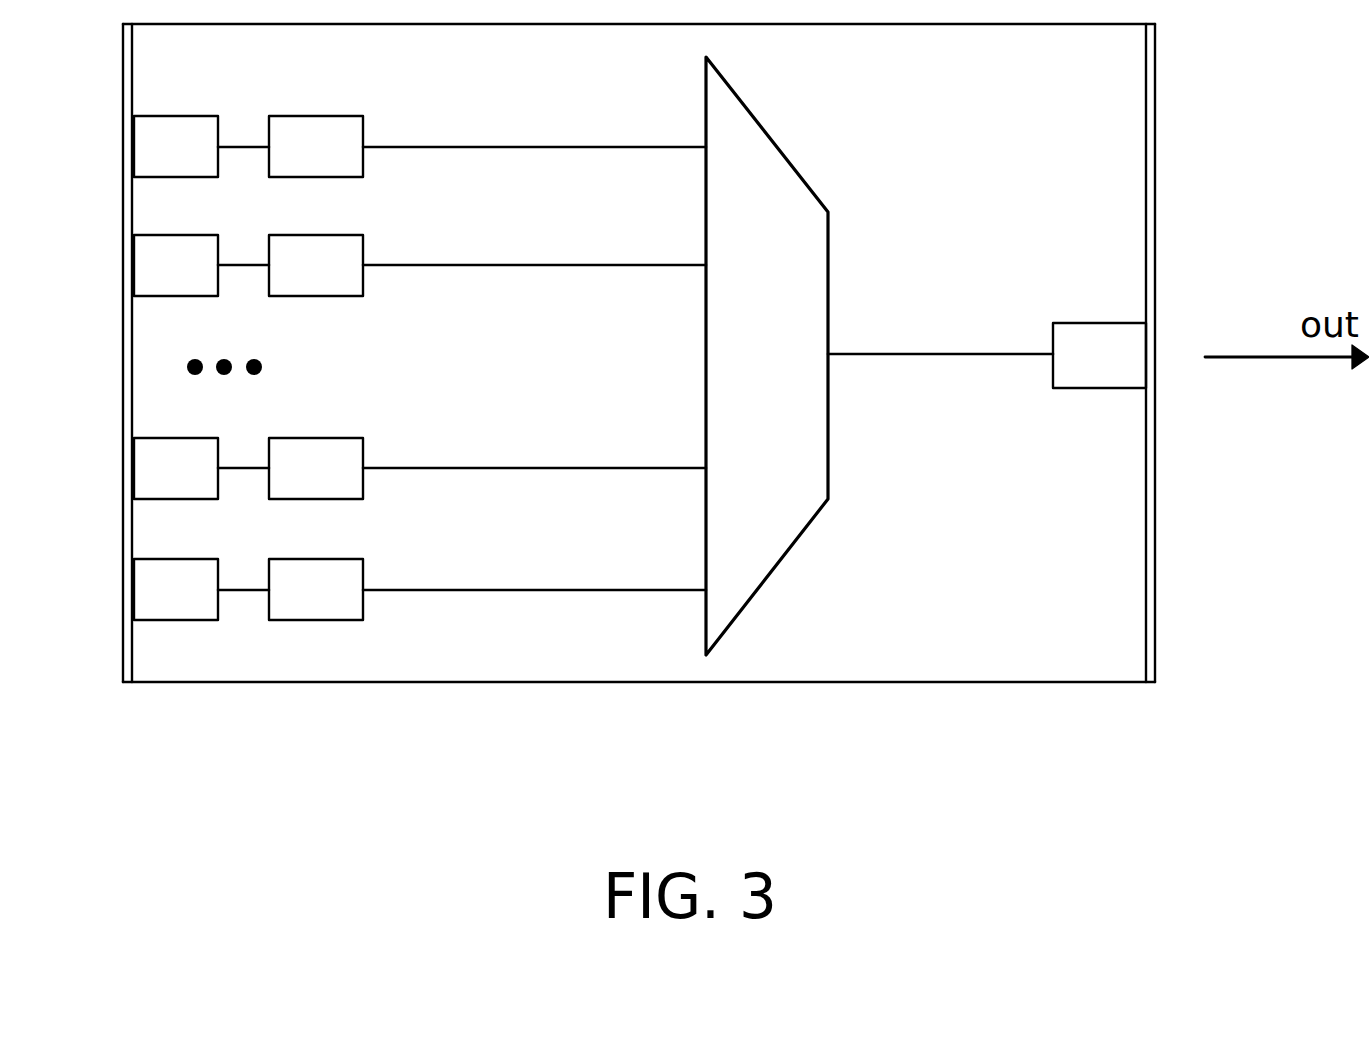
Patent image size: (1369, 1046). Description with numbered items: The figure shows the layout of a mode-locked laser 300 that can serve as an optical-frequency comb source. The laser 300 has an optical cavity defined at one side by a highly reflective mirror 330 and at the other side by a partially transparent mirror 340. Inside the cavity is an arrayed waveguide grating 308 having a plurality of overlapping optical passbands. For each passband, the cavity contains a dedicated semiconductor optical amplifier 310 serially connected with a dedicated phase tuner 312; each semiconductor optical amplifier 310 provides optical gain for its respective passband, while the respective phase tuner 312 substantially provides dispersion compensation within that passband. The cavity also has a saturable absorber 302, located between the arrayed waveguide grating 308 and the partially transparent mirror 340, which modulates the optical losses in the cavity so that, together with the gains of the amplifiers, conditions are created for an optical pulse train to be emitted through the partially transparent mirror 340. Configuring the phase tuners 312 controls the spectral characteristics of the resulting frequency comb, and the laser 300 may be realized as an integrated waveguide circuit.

The mode-locked laser 300 is at (1096, 96).
The saturable absorber 302 is at (1100, 388).
The arrayed waveguide grating 308 is at (795, 170).
The semiconductor optical amplifier 310 is at (300, 116).
The phase tuner 312 is at (148, 116).
The highly reflective mirror 330 is at (100, 366).
The partially transparent mirror 340 is at (1178, 238).